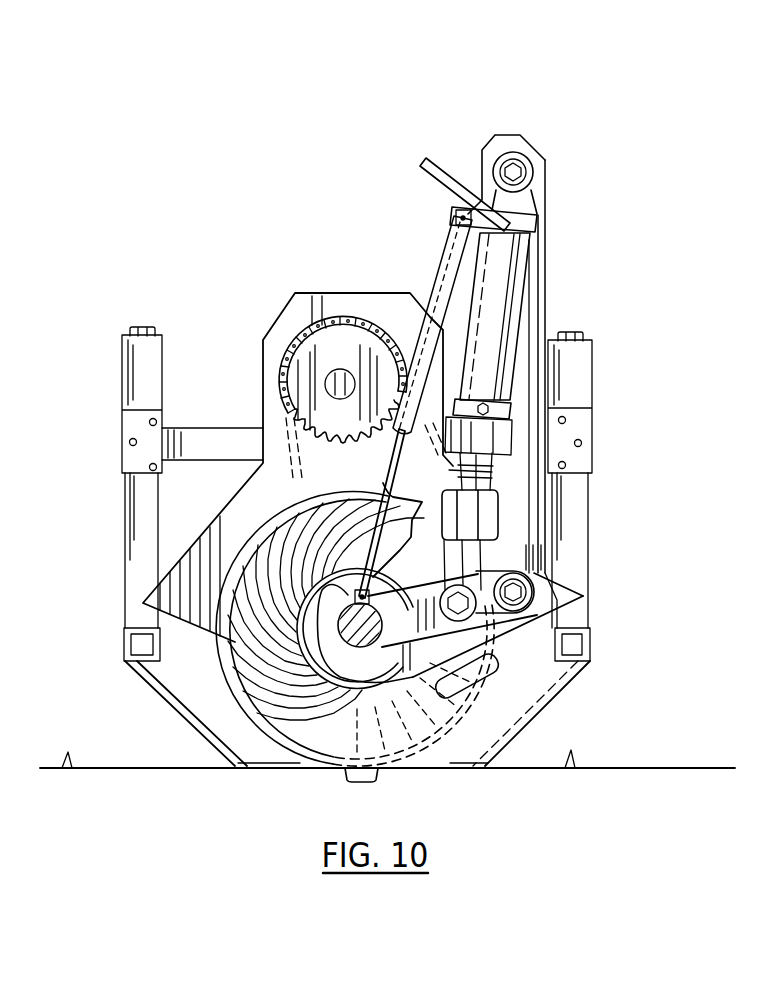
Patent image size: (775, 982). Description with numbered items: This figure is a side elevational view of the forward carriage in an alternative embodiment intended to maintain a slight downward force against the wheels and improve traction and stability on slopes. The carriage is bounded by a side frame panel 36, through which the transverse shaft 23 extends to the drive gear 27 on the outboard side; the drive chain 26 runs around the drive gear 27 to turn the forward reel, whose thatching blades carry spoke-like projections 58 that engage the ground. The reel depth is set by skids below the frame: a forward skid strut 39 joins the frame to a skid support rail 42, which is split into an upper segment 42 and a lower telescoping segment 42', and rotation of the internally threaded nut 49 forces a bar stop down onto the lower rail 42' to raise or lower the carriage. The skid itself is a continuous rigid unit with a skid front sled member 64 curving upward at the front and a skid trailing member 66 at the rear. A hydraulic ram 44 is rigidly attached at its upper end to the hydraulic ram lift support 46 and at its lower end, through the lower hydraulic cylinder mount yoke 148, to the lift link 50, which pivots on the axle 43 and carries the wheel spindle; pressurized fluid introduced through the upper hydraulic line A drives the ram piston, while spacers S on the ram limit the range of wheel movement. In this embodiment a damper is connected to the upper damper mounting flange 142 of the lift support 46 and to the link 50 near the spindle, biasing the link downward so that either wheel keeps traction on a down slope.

The upper hydraulic line A is at (447, 170).
The upper damper mounting flange 142 is at (530, 165).
The hydraulic ram lift support 46 is at (548, 266).
The hydraulic ram 44 is at (512, 300).
The internally threaded nut 49 is at (140, 330).
The skid support rail 42 is at (364, 404).
The lower skid support rail 42' is at (363, 567).
The forward skid strut 39 is at (213, 432).
The drive gear 27 is at (320, 348).
The transverse shaft 23 is at (343, 377).
The drive chain 26 is at (278, 370).
The spacers S is at (493, 468).
The side frame panel 36 is at (160, 582).
The lower hydraulic cylinder mount yoke 148 is at (520, 568).
The axle 43 is at (583, 596).
The lift link 50 is at (497, 638).
The skid trailing member 66 is at (175, 712).
The skid front sled member 64 is at (548, 692).
The spoke-like projections 58 is at (372, 780).